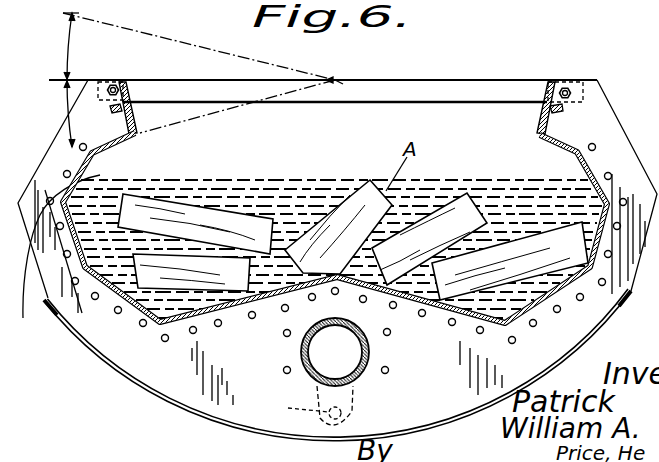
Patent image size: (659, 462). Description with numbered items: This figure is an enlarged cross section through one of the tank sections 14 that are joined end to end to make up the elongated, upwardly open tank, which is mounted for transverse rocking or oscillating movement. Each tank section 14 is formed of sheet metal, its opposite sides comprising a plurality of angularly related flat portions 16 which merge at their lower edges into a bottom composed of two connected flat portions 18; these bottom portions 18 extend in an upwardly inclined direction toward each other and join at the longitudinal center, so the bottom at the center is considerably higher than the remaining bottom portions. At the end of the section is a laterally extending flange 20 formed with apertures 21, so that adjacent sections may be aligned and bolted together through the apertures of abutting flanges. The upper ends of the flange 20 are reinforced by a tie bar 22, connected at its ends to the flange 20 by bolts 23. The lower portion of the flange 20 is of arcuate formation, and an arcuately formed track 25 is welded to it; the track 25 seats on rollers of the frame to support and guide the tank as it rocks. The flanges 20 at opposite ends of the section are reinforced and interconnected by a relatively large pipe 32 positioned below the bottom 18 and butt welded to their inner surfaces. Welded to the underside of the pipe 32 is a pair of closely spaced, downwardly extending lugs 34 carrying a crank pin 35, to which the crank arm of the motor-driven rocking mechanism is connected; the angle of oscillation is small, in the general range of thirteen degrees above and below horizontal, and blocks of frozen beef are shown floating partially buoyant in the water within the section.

The tank section 14 is at (80, 158).
The flat portion 16 is at (60, 260).
The bottom flat portion 18 is at (240, 300).
The flange 20 is at (112, 336).
The aperture 21 is at (403, 329).
The tie bar 22 is at (163, 88).
The bolt 23 is at (113, 85).
The track 25 is at (200, 415).
The pipe 32 is at (367, 373).
The lug 34 is at (353, 395).
The crank pin 35 is at (294, 402).